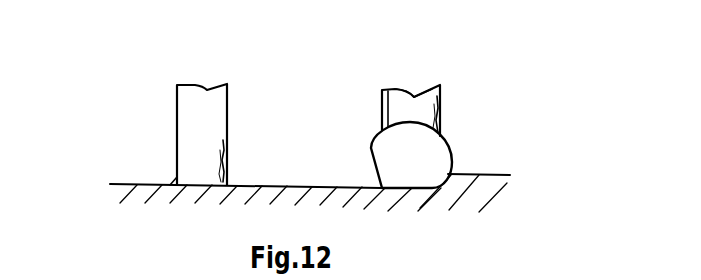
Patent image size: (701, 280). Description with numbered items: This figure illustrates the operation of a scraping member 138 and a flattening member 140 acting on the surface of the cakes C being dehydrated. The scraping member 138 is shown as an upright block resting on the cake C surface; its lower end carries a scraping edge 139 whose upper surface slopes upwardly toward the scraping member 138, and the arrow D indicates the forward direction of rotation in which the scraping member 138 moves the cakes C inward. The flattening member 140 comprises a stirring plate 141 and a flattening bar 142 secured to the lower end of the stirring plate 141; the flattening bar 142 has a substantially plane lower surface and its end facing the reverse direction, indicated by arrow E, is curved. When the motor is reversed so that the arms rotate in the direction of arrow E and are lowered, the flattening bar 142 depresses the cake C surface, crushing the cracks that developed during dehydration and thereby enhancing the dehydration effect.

The scraping member 138 is at (228, 111).
The scraping edge 139 is at (176, 182).
The flattening member 140 is at (442, 117).
The stirring plate 141 is at (415, 97).
The flattening bar 142 is at (380, 163).
The cake C is at (490, 195).
The forward direction of rotation D is at (123, 128).
The reverse direction of rotation E is at (502, 136).